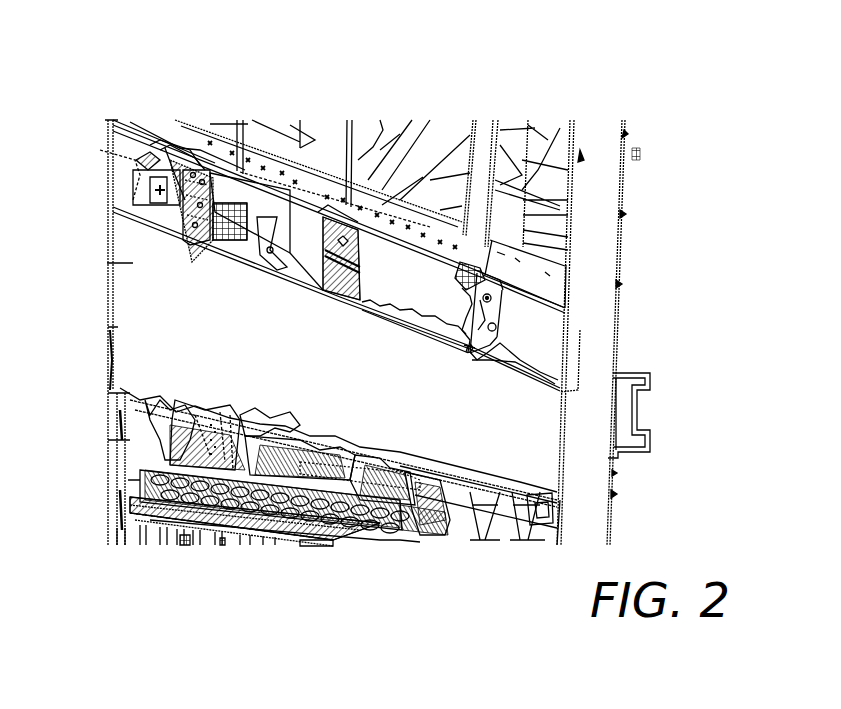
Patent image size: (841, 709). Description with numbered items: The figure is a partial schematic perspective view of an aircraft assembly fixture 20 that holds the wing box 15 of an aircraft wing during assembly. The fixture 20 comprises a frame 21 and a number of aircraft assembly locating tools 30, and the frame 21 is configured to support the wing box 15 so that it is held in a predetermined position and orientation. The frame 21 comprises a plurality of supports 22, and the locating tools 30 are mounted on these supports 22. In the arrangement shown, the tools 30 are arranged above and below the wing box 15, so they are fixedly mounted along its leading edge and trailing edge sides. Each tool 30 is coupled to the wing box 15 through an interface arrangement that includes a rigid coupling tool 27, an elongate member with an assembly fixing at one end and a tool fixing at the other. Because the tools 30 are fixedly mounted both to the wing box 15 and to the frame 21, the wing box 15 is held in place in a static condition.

The aircraft assembly fixture 20 is at (700, 117).
The frame 21 is at (130, 452).
The wing box 15 is at (560, 472).
The coupling tool 27 is at (490, 318).
The aircraft assembly locating tool 30 is at (317, 212).
The support 22 is at (325, 541).